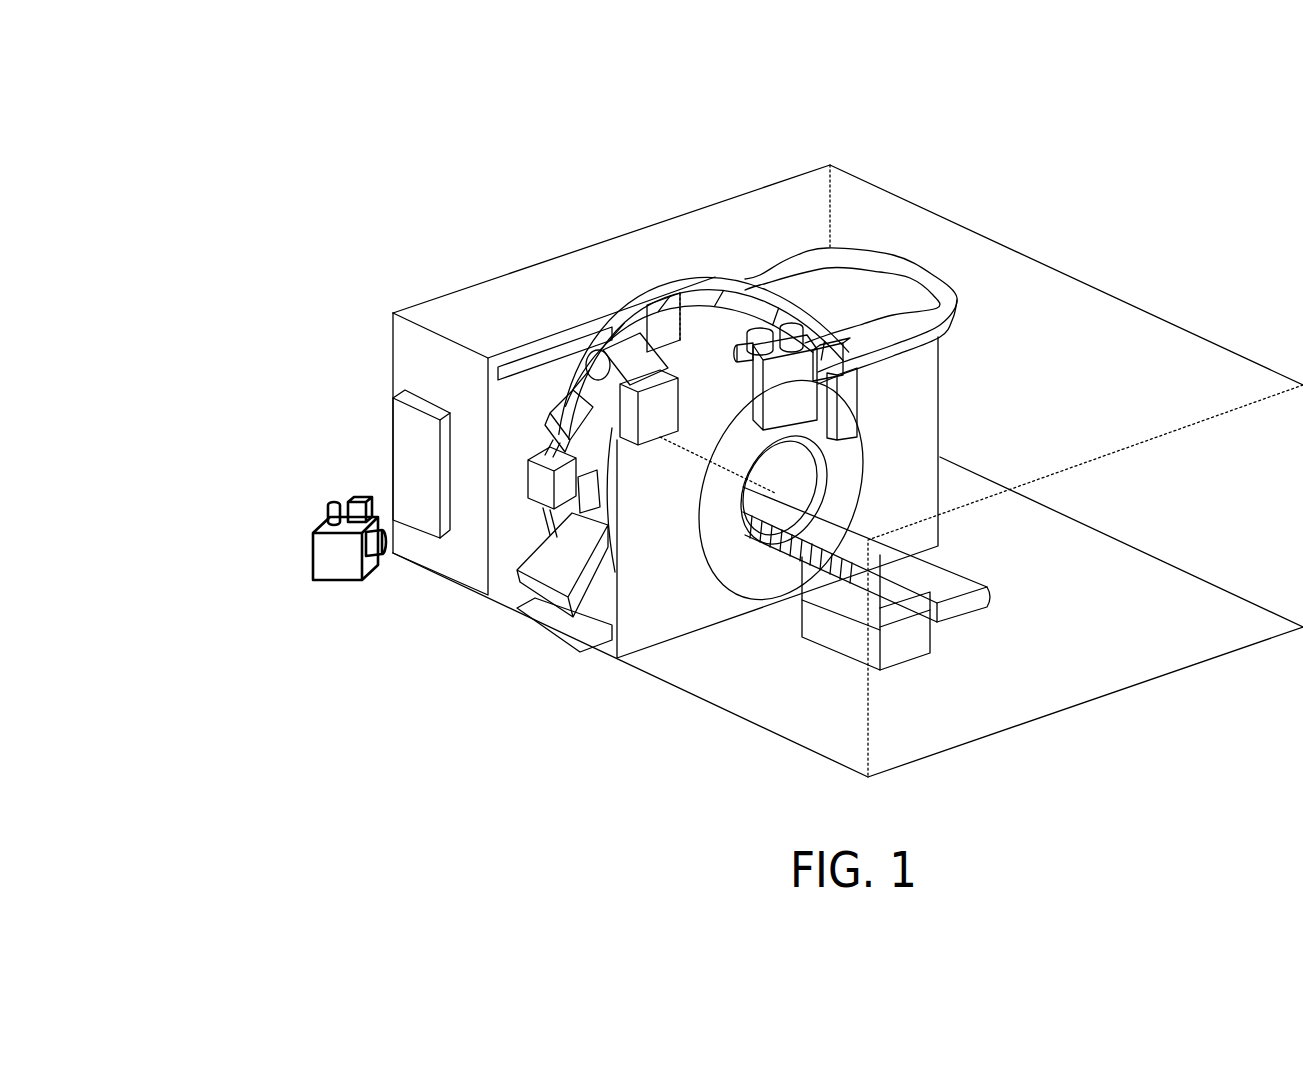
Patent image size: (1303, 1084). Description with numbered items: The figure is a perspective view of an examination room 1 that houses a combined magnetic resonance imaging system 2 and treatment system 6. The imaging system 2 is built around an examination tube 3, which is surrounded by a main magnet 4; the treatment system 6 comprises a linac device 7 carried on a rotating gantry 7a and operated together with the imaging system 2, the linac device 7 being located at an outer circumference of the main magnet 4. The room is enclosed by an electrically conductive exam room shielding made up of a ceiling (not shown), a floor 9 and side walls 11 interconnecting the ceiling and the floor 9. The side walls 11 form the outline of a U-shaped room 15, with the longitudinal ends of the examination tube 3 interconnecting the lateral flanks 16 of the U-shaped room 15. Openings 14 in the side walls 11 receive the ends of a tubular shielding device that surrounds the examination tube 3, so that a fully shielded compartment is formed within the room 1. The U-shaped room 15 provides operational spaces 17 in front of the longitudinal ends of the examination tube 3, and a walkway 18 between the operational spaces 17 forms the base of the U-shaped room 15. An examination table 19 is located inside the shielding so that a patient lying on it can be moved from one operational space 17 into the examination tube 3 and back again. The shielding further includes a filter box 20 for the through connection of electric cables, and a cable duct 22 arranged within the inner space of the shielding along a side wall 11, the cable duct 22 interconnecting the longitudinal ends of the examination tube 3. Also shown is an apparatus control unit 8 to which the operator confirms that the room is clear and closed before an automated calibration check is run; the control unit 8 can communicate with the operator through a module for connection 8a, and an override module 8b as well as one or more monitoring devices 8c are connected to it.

The examination room 1 is at (360, 270).
The magnetic resonance imaging system 2 is at (888, 178).
The examination tube 3 is at (795, 472).
The main magnet 4 is at (722, 560).
The treatment system 6 is at (548, 247).
The linac device 7 is at (570, 398).
The rotating gantry 7a is at (705, 272).
The apparatus control unit 8 is at (334, 600).
The module for connection 8a is at (333, 520).
The override module 8b is at (357, 518).
The monitoring devices 8c is at (385, 560).
The floor 9 is at (1170, 588).
The side walls 11 is at (745, 222).
The openings 14 is at (702, 515).
The U-shaped room 15 is at (1058, 262).
The lateral flanks 16 is at (382, 366).
The operational spaces 17 is at (663, 268).
The walkway 18 is at (1235, 665).
The examination table 19 is at (853, 540).
The filter box 20 is at (415, 467).
The cable duct 22 is at (947, 297).